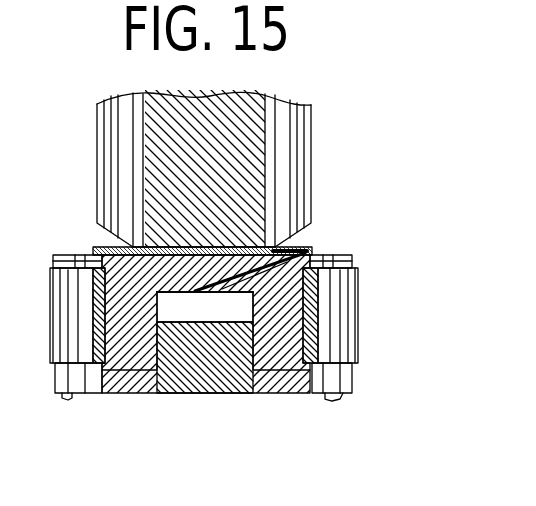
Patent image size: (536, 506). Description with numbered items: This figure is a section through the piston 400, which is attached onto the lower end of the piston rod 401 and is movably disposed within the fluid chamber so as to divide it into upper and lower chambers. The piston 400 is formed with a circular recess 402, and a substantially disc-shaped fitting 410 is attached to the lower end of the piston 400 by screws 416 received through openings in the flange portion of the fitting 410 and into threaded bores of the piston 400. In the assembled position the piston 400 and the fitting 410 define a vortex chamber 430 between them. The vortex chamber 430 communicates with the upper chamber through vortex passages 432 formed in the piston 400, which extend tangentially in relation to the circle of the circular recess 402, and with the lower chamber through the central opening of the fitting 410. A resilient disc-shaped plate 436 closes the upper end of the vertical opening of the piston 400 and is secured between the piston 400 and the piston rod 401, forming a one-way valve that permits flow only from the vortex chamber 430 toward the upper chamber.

The piston 400 is at (352, 262).
The piston rod 401 is at (311, 121).
The circular recess 402 is at (250, 300).
The fitting 410 is at (178, 373).
The screws 416 is at (67, 398).
The vortex chamber 430 is at (150, 360).
The vortex passages 432 is at (222, 290).
The resilient disc-shaped plate 436 is at (305, 250).